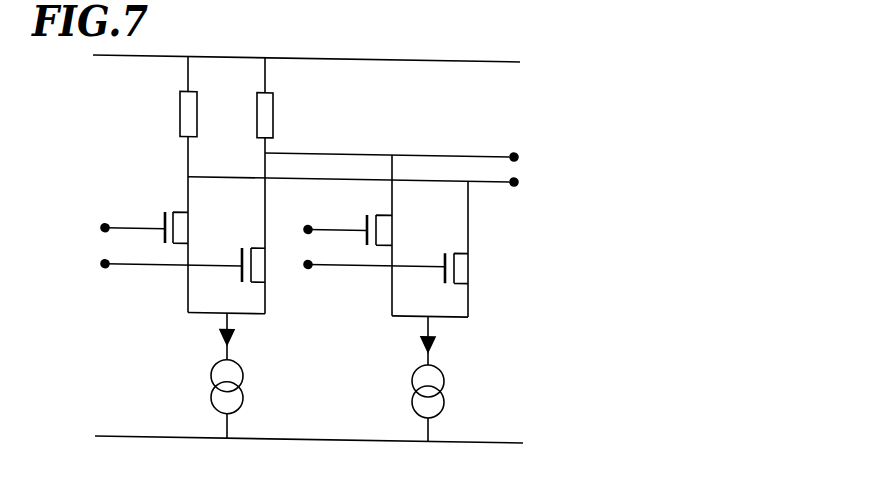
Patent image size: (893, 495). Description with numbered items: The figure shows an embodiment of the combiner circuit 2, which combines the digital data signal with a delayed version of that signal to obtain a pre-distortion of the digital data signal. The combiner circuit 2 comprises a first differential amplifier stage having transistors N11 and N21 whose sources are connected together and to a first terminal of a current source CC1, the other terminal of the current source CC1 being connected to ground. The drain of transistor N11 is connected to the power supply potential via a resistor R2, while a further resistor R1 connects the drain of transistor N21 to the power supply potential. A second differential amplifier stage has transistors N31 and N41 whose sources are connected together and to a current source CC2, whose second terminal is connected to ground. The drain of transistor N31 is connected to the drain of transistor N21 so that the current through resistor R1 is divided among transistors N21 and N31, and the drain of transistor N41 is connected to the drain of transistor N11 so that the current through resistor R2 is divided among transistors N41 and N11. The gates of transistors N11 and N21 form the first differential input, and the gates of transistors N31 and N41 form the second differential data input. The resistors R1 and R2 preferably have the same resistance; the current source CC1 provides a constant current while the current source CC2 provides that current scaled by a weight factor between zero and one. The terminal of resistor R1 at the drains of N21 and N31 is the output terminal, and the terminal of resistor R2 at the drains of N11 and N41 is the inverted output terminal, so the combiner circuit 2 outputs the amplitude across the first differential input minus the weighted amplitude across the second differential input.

The combiner circuit 2 is at (318, 253).
The resistor R1 is at (276, 186).
The resistor R2 is at (201, 184).
The transistor N11 is at (144, 214).
The transistor N21 is at (183, 251).
The transistor N31 is at (348, 235).
The transistor N41 is at (386, 248).
The current source CC1 is at (210, 375).
The current source CC2 is at (448, 379).